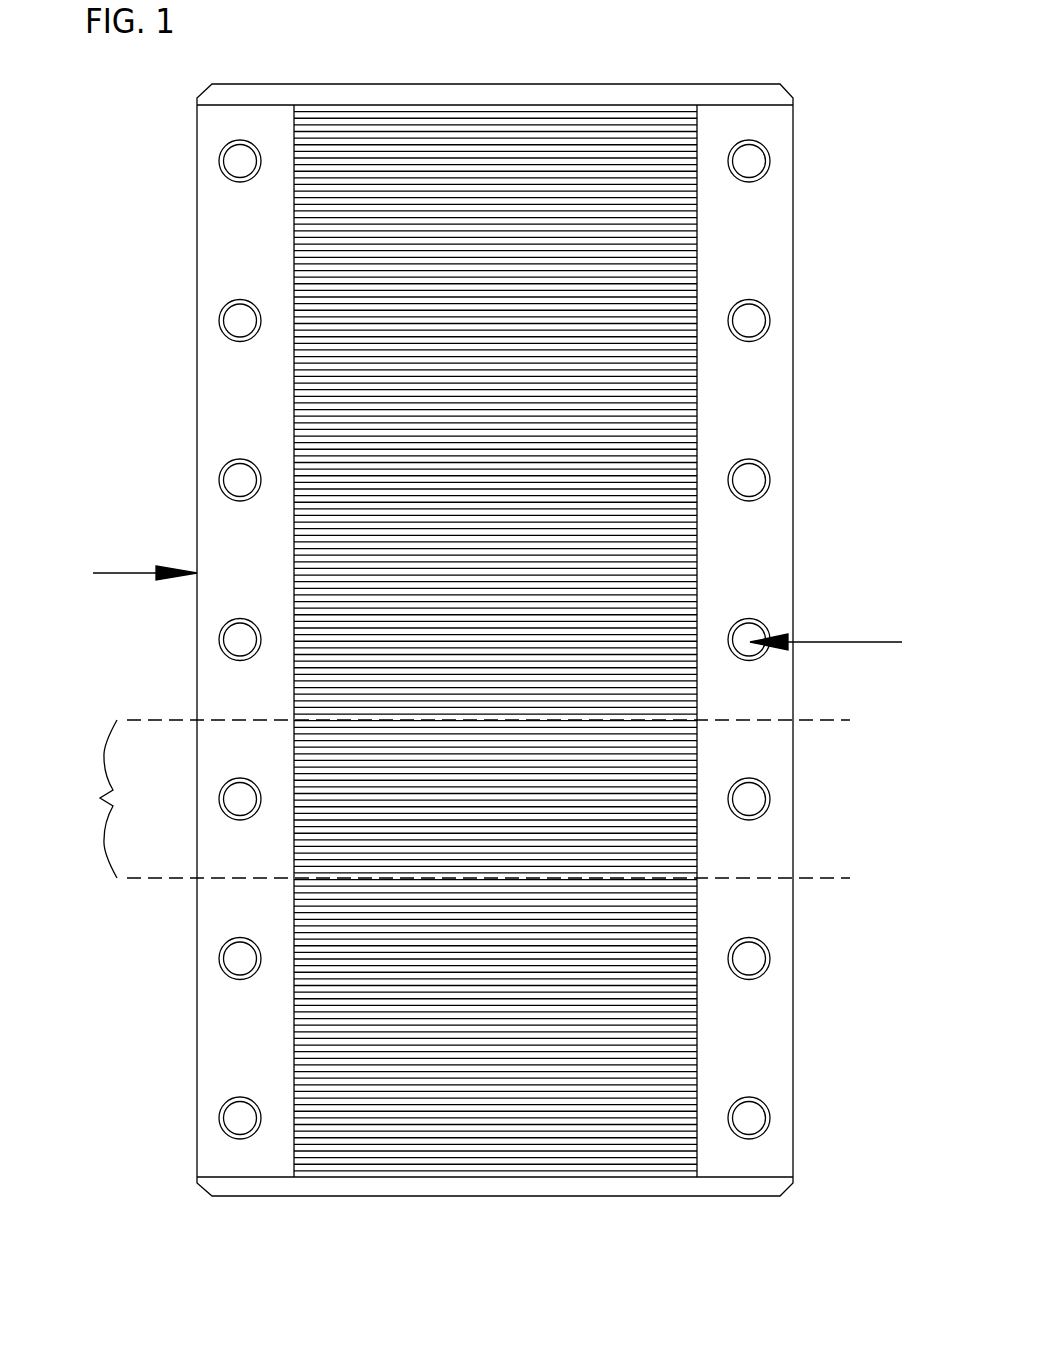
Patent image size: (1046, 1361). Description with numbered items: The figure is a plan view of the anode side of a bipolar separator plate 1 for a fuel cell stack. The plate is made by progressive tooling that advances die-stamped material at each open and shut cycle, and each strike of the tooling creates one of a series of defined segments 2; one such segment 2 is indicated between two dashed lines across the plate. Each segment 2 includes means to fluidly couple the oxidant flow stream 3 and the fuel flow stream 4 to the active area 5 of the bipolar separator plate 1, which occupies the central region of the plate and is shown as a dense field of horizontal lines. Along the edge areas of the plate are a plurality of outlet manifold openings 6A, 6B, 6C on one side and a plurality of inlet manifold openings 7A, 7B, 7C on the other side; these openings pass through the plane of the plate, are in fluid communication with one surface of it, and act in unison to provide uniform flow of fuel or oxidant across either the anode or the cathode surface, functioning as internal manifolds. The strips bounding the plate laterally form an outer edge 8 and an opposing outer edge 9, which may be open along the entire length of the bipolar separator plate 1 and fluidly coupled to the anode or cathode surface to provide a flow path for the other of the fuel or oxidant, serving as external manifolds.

The bipolar separator plate 1 is at (818, 81).
The segment 2 is at (92, 802).
The oxidant flow stream 3 is at (133, 573).
The fuel flow stream 4 is at (849, 642).
The active area 5 is at (520, 223).
The outlet manifold opening 6A is at (220, 155).
The outlet manifold opening 6B is at (220, 315).
The outlet manifold opening 6C is at (221, 470).
The inlet manifold opening 7A is at (770, 160).
The inlet manifold opening 7B is at (770, 320).
The inlet manifold opening 7C is at (770, 480).
The outer edge 8 is at (795, 411).
The opposing outer edge 9 is at (197, 385).